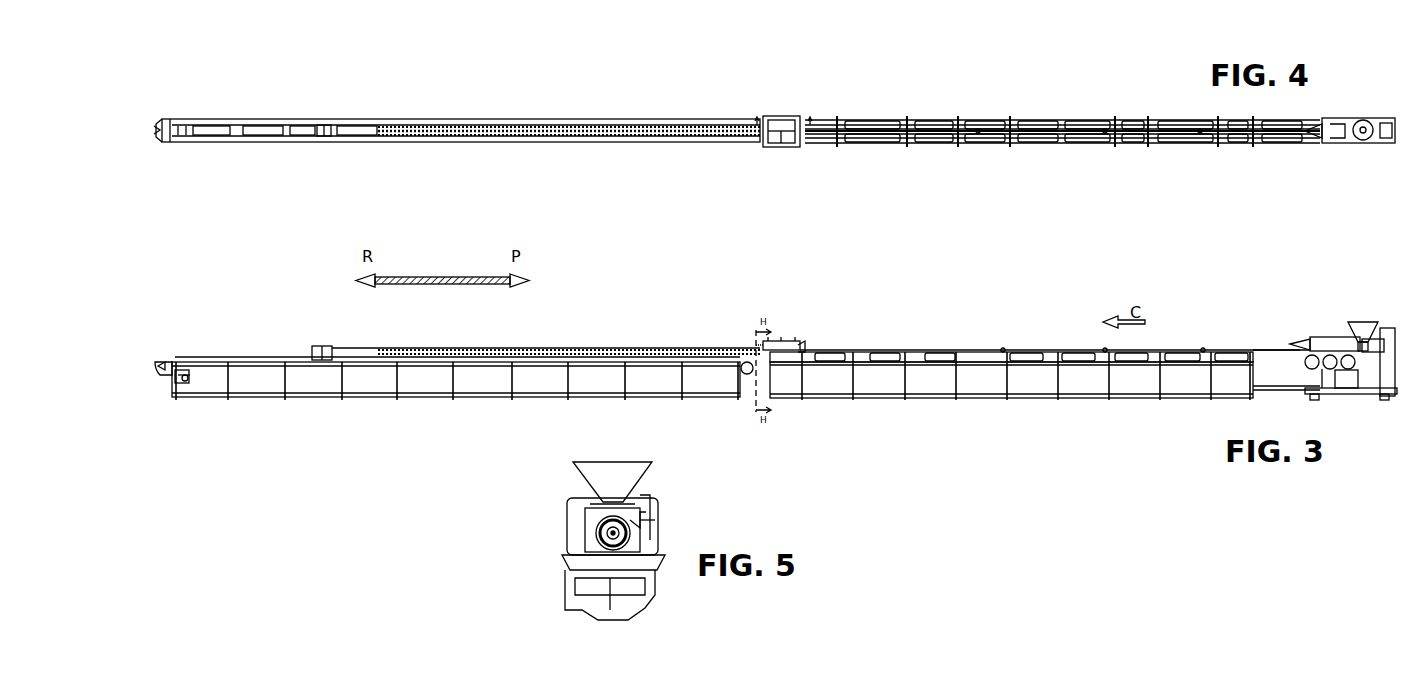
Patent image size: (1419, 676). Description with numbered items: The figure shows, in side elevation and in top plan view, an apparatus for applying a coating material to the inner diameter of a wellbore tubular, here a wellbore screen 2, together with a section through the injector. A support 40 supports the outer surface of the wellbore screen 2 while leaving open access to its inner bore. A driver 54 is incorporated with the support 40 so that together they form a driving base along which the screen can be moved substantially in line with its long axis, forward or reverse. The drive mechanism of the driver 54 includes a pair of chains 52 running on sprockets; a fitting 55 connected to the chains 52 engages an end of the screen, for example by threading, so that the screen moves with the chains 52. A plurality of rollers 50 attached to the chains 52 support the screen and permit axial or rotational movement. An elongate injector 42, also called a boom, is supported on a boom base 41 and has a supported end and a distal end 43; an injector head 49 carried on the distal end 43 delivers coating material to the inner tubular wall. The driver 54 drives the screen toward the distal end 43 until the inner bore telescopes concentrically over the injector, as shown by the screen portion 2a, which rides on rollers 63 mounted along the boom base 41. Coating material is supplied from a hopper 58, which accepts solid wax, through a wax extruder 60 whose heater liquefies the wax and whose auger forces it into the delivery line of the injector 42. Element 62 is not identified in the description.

In FIG. 4, the wellbore screen 2 is at (484, 128).
In FIG. 5, the wellbore screen 2 is at (600, 533).
In FIG. 4, the screen portion 2a is at (857, 125).
In FIG. 3, the screen portion 2a is at (898, 350).
In FIG. 3, the support 40 is at (212, 397).
In FIG. 4, the boom base 41 is at (880, 148).
In FIG. 3, the boom base 41 is at (858, 350).
In FIG. 4, the elongate injector 42 is at (950, 148).
In FIG. 3, the elongate injector 42 is at (922, 350).
In FIG. 4, the distal end 43 is at (784, 125).
In FIG. 3, the distal end 43 is at (760, 340).
In FIG. 5, the distal end 43 is at (552, 555).
In FIG. 5, the injector head 49 is at (620, 546).
In FIG. 3, the rollers 50 is at (600, 355).
In FIG. 3, the chains 52 is at (164, 377).
In FIG. 3, the driver 54 is at (162, 362).
In FIG. 4, the fitting 55 is at (322, 128).
In FIG. 3, the fitting 55 is at (330, 346).
In FIG. 4, the hopper 58 is at (1372, 322).
In FIG. 3, the hopper 58 is at (1372, 318).
In FIG. 5, the hopper 58 is at (628, 475).
In FIG. 4, the wax extruder 60 is at (1335, 147).
In FIG. 3, the wax extruder 60 is at (1340, 343).
In FIG. 3, the guide 62 is at (800, 340).
In FIG. 5, the guide 62 is at (635, 528).
In FIG. 4, the rollers 63 is at (1135, 125).
In FIG. 3, the rollers 63 is at (1078, 350).